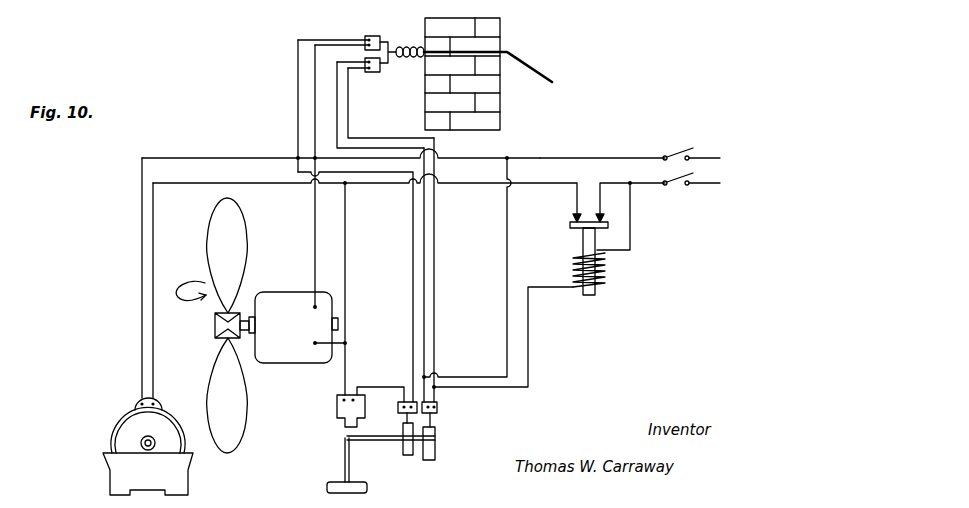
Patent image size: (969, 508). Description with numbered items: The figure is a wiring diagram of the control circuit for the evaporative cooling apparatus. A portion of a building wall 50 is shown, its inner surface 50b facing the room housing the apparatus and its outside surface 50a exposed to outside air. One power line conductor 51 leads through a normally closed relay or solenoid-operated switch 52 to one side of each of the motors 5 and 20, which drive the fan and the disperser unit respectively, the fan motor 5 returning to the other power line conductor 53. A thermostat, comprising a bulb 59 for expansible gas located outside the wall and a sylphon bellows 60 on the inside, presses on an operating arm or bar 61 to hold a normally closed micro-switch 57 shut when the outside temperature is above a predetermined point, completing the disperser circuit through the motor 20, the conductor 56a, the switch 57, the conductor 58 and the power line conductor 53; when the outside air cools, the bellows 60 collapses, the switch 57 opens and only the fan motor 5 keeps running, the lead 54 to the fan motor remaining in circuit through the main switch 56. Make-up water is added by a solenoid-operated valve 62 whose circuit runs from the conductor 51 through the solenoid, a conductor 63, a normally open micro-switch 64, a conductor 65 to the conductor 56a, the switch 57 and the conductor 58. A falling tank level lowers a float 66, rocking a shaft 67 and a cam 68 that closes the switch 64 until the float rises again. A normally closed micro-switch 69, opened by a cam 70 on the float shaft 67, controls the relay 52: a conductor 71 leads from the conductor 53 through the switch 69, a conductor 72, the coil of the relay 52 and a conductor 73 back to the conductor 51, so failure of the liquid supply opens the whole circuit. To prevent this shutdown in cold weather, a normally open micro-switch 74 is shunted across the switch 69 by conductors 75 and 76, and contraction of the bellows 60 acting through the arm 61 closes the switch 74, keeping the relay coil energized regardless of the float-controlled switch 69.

The fan motor 5 is at (272, 325).
The disperser motor 20 is at (128, 440).
The building wall 50 is at (496, 24).
The outside surface 50a is at (505, 118).
The inner surface 50b is at (422, 113).
The power line conductor 51 is at (153, 278).
The normally closed relay or solenoid-operated switch 52 is at (563, 228).
The power line conductor 53 is at (542, 158).
The motor lead 54 is at (315, 245).
The main switch 56 is at (702, 146).
The conductor 56a is at (142, 250).
The micro-switch 57 is at (371, 36).
The conductor 58 is at (313, 127).
The bulb or container 59 is at (553, 85).
The sylphon bellows 60 is at (410, 47).
The operating arm or bar 61 is at (391, 60).
The solenoid-operated valve 62 is at (337, 410).
The conductor 63 is at (372, 387).
The micro-switch 64 is at (398, 410).
The conductor 65 is at (413, 330).
The float 66 is at (327, 488).
The shaft 67 is at (380, 442).
The cam 68 is at (407, 455).
The micro-switch 69 is at (437, 410).
The cam 70 is at (430, 460).
The conductor 71 is at (507, 343).
The conductor 72 is at (556, 288).
The conductor 73 is at (631, 242).
The micro-switch 74 is at (376, 72).
The conductor 75 is at (337, 79).
The conductor 76 is at (348, 100).